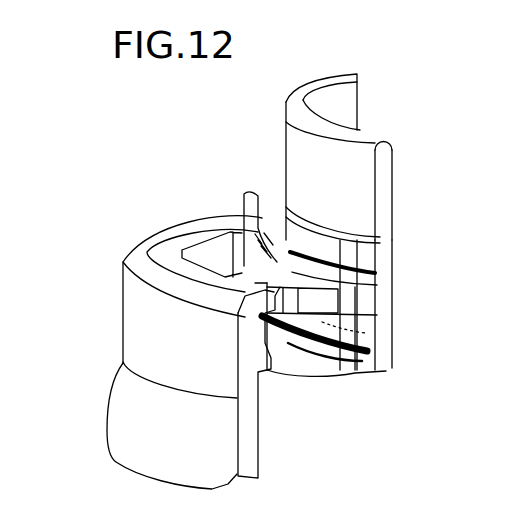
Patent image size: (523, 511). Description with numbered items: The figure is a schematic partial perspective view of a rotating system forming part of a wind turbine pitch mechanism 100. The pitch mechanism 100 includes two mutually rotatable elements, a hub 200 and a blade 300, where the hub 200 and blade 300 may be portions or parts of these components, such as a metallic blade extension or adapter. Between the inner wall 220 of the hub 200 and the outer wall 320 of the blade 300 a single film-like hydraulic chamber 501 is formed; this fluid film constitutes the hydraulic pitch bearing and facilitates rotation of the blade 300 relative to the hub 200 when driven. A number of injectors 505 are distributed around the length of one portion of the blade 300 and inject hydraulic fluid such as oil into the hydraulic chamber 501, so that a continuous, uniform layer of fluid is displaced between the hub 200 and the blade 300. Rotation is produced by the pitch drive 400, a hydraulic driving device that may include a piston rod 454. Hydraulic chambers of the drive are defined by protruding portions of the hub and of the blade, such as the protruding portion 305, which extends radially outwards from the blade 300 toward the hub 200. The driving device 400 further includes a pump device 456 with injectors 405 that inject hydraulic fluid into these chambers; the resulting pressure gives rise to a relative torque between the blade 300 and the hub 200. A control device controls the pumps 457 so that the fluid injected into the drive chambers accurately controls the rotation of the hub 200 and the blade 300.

The pitch mechanism 100 is at (190, 140).
The hub 200 is at (138, 331).
The inner wall of the hub 220 is at (212, 258).
The blade 300 is at (358, 72).
The protruding portion of the blade 305 is at (326, 376).
The outer wall of the blade 320 is at (388, 322).
The pitch drive 400 is at (277, 272).
The injectors 405 is at (366, 302).
The piston rod 454 is at (285, 277).
The pump device 456 is at (281, 266).
The pumps 457 is at (292, 266).
The hydraulic chamber 501 is at (380, 377).
The injectors 505 is at (378, 274).